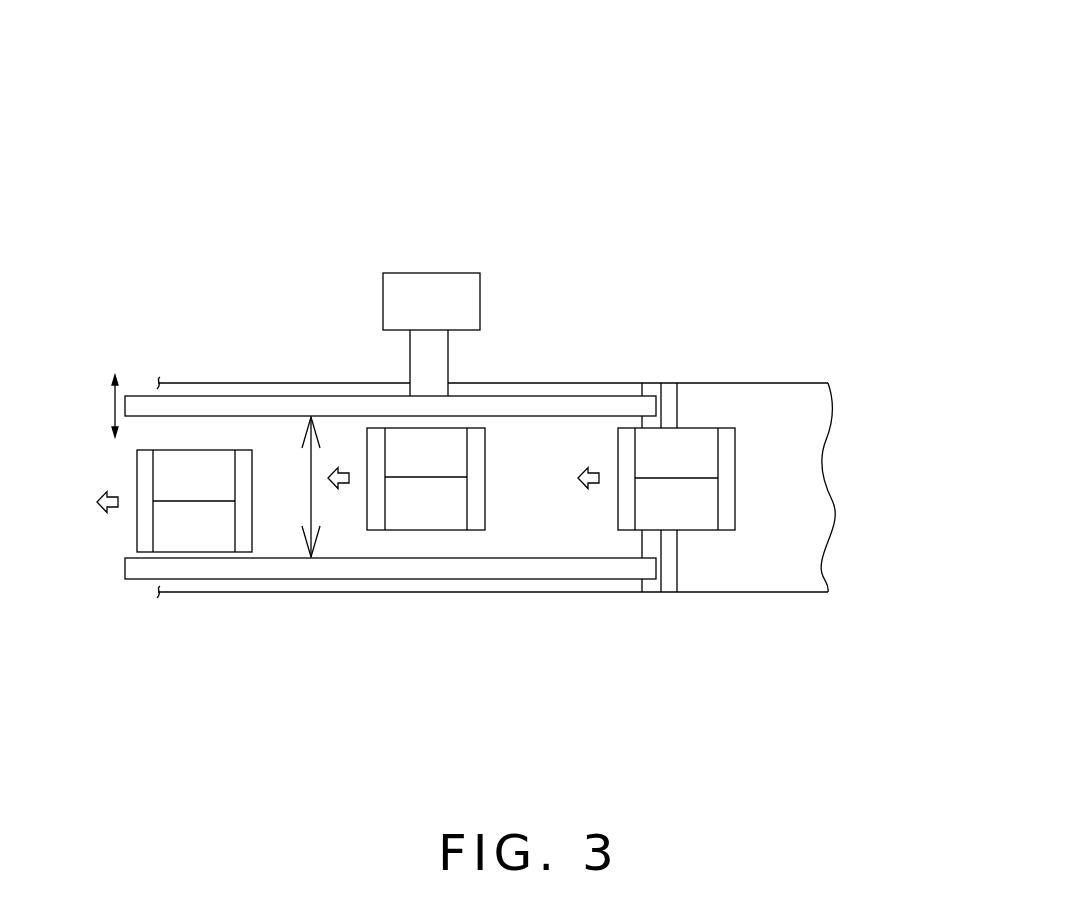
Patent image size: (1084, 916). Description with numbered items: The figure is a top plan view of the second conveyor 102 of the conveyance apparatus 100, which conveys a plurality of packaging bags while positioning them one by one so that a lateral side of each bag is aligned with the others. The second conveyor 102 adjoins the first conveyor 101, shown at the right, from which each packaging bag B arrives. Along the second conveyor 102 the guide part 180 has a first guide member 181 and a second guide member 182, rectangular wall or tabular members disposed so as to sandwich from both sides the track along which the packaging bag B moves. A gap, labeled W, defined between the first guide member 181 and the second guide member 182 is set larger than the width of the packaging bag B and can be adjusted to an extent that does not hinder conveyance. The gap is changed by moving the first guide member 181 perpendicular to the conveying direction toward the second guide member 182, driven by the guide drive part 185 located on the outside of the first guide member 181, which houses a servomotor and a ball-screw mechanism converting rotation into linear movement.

The conveyance apparatus 100 is at (650, 110).
The first conveyor 101 is at (768, 407).
The second conveyor 102 is at (288, 437).
The guide part 180 is at (495, 210).
The first guide member 181 is at (530, 410).
The second guide member 182 is at (483, 570).
The guide drive part 185 is at (425, 288).
The packaging bag B is at (700, 518).